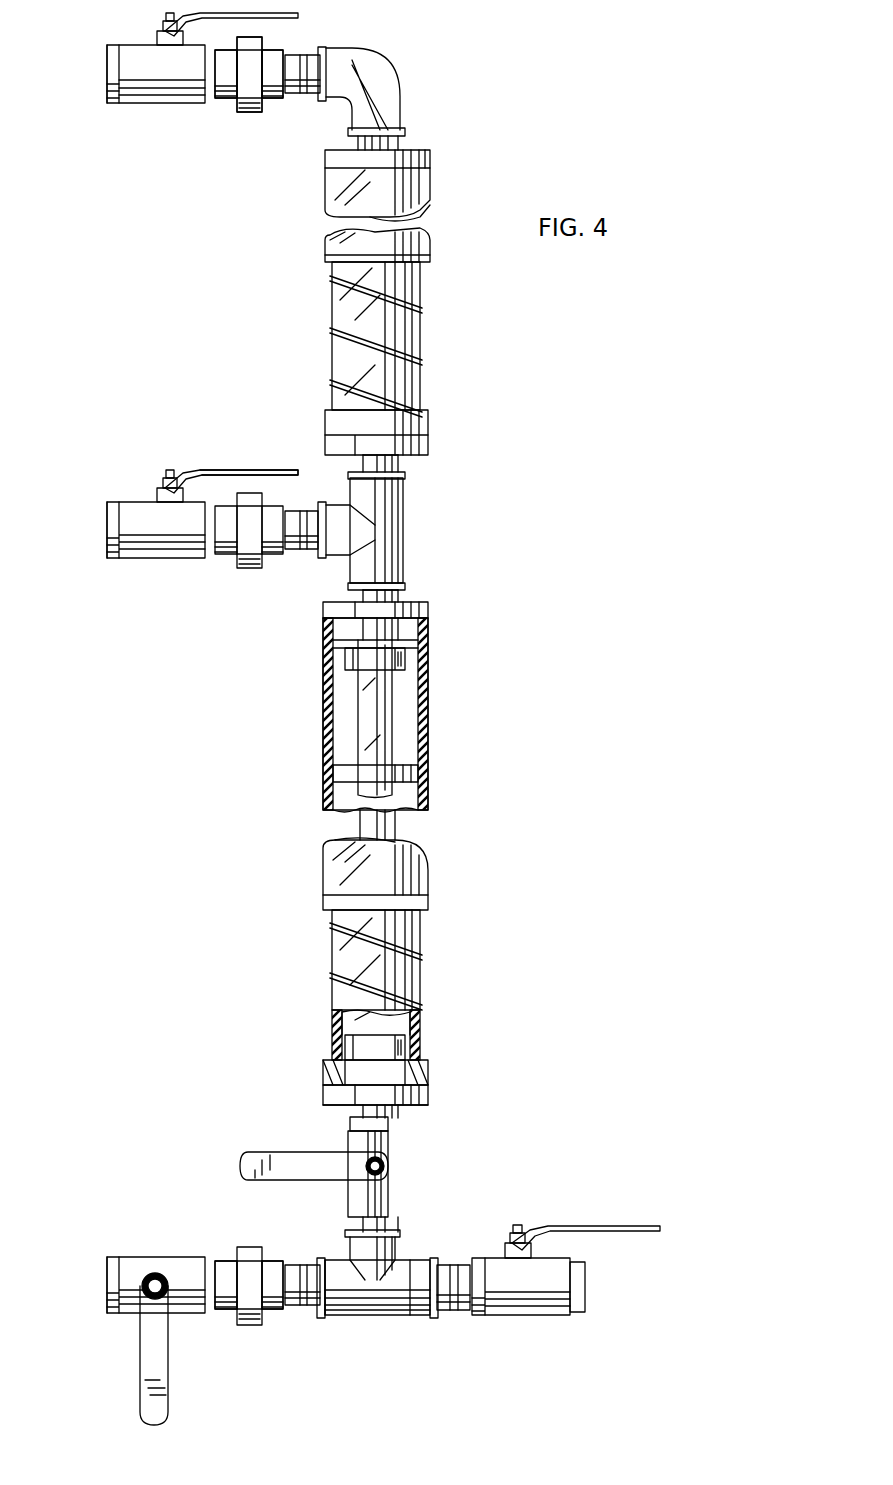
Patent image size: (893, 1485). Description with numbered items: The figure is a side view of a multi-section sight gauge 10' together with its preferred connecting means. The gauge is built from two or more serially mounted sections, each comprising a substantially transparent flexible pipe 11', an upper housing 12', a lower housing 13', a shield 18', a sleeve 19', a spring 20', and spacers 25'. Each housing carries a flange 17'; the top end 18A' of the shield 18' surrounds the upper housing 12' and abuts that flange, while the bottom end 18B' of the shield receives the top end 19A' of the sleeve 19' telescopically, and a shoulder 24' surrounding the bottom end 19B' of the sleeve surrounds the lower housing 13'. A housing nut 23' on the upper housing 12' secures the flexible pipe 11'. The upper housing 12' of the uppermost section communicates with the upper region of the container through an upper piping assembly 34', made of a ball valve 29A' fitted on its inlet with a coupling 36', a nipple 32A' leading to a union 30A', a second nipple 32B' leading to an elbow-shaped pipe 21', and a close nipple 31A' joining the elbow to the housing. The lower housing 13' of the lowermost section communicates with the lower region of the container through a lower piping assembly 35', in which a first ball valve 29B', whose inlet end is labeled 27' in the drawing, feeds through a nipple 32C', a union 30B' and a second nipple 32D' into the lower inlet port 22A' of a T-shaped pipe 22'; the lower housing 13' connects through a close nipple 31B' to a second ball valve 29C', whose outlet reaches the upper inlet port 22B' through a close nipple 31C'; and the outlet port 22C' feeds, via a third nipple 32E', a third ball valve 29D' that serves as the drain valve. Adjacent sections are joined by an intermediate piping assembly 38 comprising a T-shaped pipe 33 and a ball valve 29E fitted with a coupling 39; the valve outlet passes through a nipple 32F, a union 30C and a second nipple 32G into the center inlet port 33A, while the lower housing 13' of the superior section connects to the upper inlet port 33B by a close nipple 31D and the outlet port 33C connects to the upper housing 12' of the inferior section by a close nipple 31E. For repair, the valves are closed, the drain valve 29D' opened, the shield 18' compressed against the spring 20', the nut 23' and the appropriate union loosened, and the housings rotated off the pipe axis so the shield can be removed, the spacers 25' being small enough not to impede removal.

The sight gauge 10' is at (571, 503).
The flexible pipe 11' is at (428, 719).
The upper housing 12' is at (397, 417).
The lower housing 13' is at (424, 742).
The flange 17' is at (369, 844).
The shield 18' is at (422, 481).
The top end of shield 18A' is at (295, 651).
The bottom end of shield 18B' is at (436, 878).
The sleeve 19' is at (423, 636).
The top end of sleeve 19A' is at (328, 827).
The bottom end of sleeve 19B' is at (311, 1119).
The spring 20' is at (379, 635).
The elbow-shaped pipe 21' is at (377, 84).
The T-shaped pipe 22' is at (377, 1296).
The lower inlet port 22A' is at (317, 1332).
The upper inlet port 22B' is at (344, 1218).
The outlet port 22C' is at (447, 1262).
The housing nut 23' is at (377, 854).
The shoulder 24' is at (423, 1041).
The spacers 25' is at (435, 781).
The valve inlet 27' is at (84, 1315).
The ball valve 29A' is at (202, 93).
The first ball valve 29B' is at (156, 1312).
The second ball valve 29C' is at (371, 1167).
The third ball valve 29D' is at (566, 1308).
The ball valve 29E is at (152, 560).
The union 30A' is at (228, 117).
The union 30B' is at (254, 1262).
The union 30C is at (247, 572).
The close nipple 31A' is at (435, 123).
The close nipple 31B' is at (334, 1121).
The close nipple 31C' is at (427, 1206).
The close nipple 31D is at (363, 460).
The close nipple 31E is at (400, 596).
The nipple 32A' is at (203, 112).
The second nipple 32B' is at (264, 112).
The nipple 32C' is at (215, 1318).
The second nipple 32D' is at (283, 1318).
The third nipple 32E' is at (464, 1311).
The nipple 32F is at (222, 560).
The second nipple 32G is at (265, 512).
The T-shaped pipe 33 is at (404, 532).
The center inlet port 33A is at (322, 556).
The upper inlet port 33B is at (402, 470).
The outlet port 33C is at (400, 586).
The upper piping assembly 34' is at (301, 61).
The lower piping assembly 35' is at (360, 1370).
The coupling 36' is at (79, 105).
The intermediate piping assembly 38 is at (202, 468).
The coupling 39 is at (108, 548).